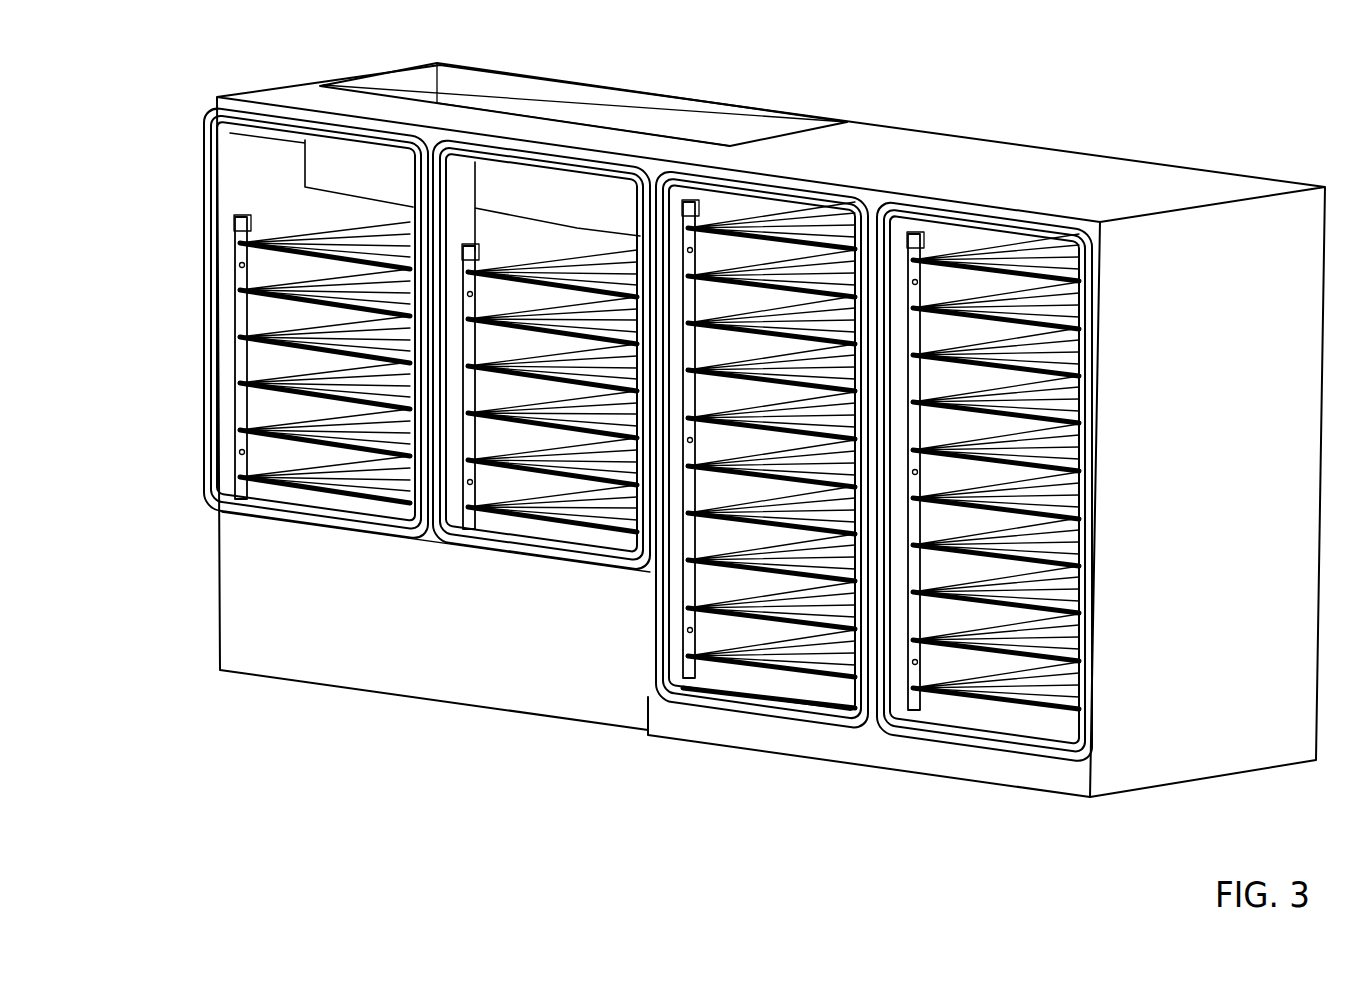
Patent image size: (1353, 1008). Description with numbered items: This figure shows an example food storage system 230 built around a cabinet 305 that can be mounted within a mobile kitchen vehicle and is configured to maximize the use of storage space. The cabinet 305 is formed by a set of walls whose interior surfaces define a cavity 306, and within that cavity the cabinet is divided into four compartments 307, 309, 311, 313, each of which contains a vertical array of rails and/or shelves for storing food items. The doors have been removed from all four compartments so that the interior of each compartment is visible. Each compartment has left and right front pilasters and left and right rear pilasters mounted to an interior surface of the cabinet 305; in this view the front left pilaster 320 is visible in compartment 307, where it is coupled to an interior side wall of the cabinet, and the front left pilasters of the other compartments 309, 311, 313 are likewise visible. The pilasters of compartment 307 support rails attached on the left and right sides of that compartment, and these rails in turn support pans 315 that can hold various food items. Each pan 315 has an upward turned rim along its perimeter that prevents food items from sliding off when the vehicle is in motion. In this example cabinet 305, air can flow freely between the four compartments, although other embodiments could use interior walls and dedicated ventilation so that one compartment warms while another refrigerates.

The food storage system 230 is at (1228, 70).
The cabinet 305 is at (298, 90).
The cavity 306 is at (280, 160).
The compartment 307 is at (248, 188).
The compartment 309 is at (607, 570).
The compartment 311 is at (793, 707).
The compartment 313 is at (1030, 745).
The pans 315 is at (297, 450).
The front left pilaster 320 is at (233, 310).